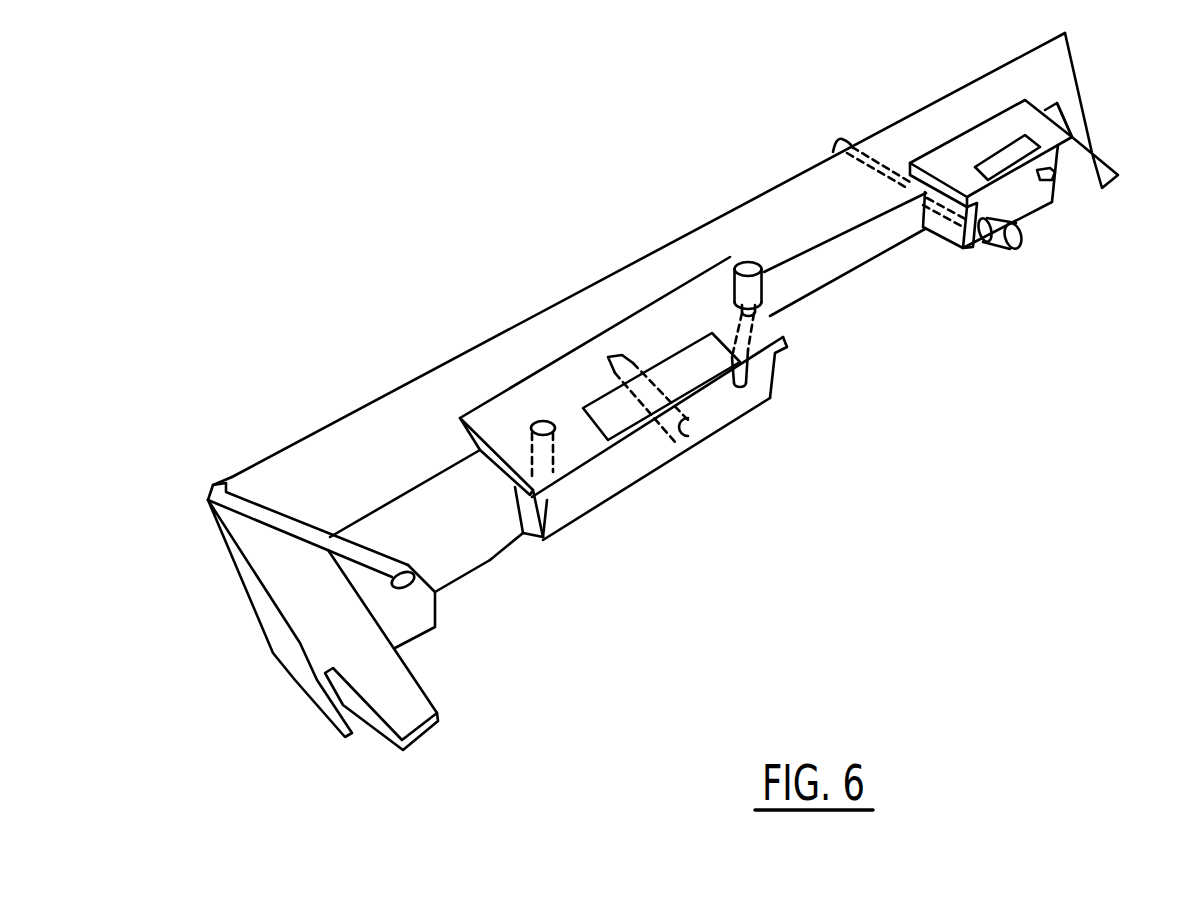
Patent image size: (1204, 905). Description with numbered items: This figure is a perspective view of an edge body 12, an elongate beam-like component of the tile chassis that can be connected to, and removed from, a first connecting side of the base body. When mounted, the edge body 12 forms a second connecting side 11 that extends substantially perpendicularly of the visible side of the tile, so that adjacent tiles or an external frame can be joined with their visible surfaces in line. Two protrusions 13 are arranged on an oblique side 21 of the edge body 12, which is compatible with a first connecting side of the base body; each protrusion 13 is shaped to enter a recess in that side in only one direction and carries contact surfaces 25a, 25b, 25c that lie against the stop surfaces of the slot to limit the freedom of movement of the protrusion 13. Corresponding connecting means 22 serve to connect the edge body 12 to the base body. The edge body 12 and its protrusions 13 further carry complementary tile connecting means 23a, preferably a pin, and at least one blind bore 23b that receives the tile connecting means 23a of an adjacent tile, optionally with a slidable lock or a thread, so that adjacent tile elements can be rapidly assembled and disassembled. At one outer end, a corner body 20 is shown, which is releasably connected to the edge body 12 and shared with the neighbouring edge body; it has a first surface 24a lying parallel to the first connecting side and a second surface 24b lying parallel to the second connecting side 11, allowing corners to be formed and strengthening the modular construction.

The second connecting side 11 is at (675, 340).
The edge body 12 is at (302, 168).
The protrusion 13 is at (829, 380).
The corner body 20 is at (290, 573).
The oblique side 21 is at (353, 442).
The connecting means 22 is at (745, 262).
The tile connecting means 23a is at (1020, 240).
The blind bore 23b is at (688, 428).
The first surface 24a is at (225, 492).
The second surface 24b is at (276, 590).
The contact surface 25a is at (568, 478).
The contact surface 25b is at (521, 524).
The contact surface 25c is at (754, 425).